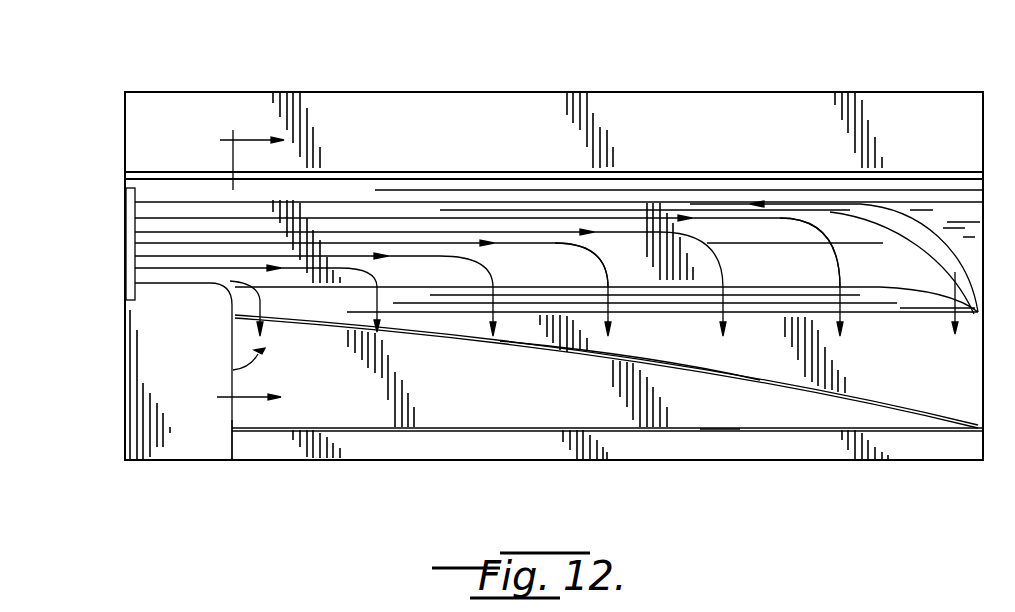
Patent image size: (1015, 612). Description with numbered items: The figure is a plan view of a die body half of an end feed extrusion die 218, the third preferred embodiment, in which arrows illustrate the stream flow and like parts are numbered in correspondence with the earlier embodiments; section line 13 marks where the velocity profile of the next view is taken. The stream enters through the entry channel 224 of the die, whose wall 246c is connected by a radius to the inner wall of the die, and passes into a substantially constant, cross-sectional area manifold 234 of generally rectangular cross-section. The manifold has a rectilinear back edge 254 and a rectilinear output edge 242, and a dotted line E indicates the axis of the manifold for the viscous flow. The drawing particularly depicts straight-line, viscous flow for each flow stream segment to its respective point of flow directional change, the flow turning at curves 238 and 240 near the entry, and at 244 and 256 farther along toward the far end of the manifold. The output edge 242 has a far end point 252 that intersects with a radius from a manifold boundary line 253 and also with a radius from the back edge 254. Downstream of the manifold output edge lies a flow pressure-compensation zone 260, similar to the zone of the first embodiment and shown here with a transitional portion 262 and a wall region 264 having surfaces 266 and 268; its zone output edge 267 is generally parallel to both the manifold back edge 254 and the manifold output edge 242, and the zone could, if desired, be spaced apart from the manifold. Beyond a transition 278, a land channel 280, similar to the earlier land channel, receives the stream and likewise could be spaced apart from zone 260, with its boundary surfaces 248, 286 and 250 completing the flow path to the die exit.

The extrusion die 218 is at (378, 86).
The entry channel 224 is at (167, 210).
The section line 13- 13 is at (228, 276).
The manifold 234 is at (343, 213).
The back edge 254 is at (515, 198).
The axis of the manifold E is at (627, 243).
The curved flow boundary 244 is at (928, 230).
The wall of entry channel 246c is at (148, 286).
The block portion 238 is at (230, 281).
The flow arrow 240 is at (257, 300).
The output edge 242 is at (446, 312).
The manifold boundary line 253 is at (567, 282).
The flow arrow 256 is at (763, 296).
The far end point 252 is at (957, 328).
The upper surface of vane 266 is at (625, 357).
The downstream end 268 is at (982, 380).
The flow pressure-compensation zone 260 is at (233, 370).
The vane portion 262 is at (390, 360).
The zone output edge 267 is at (468, 423).
The lower channel 278 is at (582, 425).
The land channel 280 is at (712, 424).
The sloped vane 264 is at (767, 383).
The lower channel inlet 248 is at (236, 421).
The bottom wall 286 is at (516, 430).
The bottom wall 250 is at (657, 460).